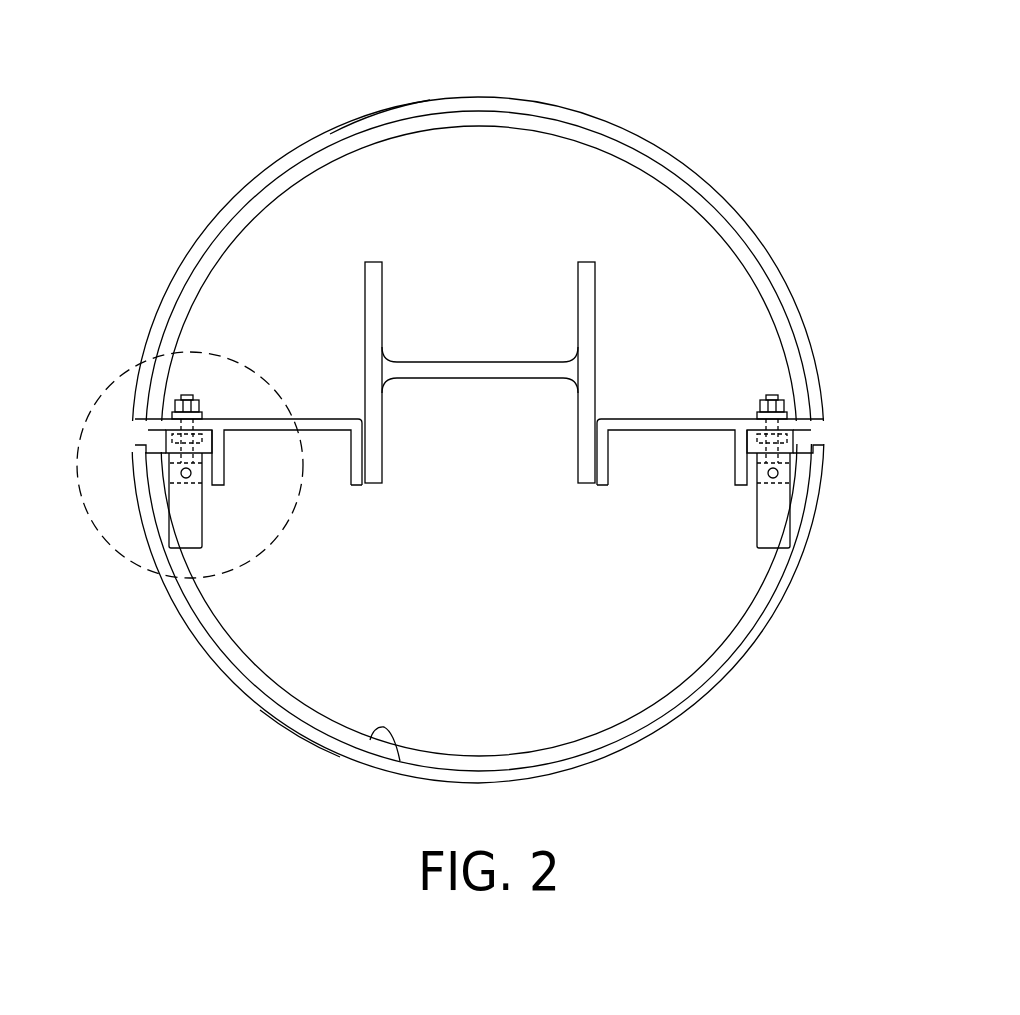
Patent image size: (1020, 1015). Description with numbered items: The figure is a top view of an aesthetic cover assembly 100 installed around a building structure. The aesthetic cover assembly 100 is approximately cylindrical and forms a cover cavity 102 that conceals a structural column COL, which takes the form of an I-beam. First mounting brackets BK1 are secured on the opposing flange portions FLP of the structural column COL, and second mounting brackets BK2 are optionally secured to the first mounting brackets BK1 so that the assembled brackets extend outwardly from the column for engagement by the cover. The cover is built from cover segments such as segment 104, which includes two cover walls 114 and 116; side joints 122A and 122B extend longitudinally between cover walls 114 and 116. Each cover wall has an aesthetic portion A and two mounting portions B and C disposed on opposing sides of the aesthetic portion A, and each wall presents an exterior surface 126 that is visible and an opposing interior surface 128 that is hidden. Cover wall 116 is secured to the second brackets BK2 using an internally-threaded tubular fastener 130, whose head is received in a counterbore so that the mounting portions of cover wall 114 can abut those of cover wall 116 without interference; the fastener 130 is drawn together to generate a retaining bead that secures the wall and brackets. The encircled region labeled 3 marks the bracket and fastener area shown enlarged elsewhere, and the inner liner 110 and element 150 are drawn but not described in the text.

The aesthetic cover assembly 100 is at (660, 100).
The cover cavity 102 is at (506, 153).
The cover segment 104 is at (206, 655).
The inner liner 110 is at (440, 127).
The cover wall 114 is at (662, 727).
The cover wall 116 is at (378, 103).
The side joint 122A is at (828, 445).
The side joint 122B is at (132, 443).
The exterior surface 126 is at (302, 742).
The interior surface 128 is at (372, 731).
The internally-threaded tubular fastener 130 is at (197, 395).
The pin 150 is at (193, 517).
The first mounting bracket BK1 is at (344, 419).
The second mounting bracket BK2 is at (223, 462).
The structural column COL is at (455, 366).
The flange portion FLP is at (382, 303).
The detail view indicator 3 is at (190, 464).
The aesthetic portion A is at (250, 180).
The mounting portion B is at (148, 414).
The mounting portion C is at (806, 414).